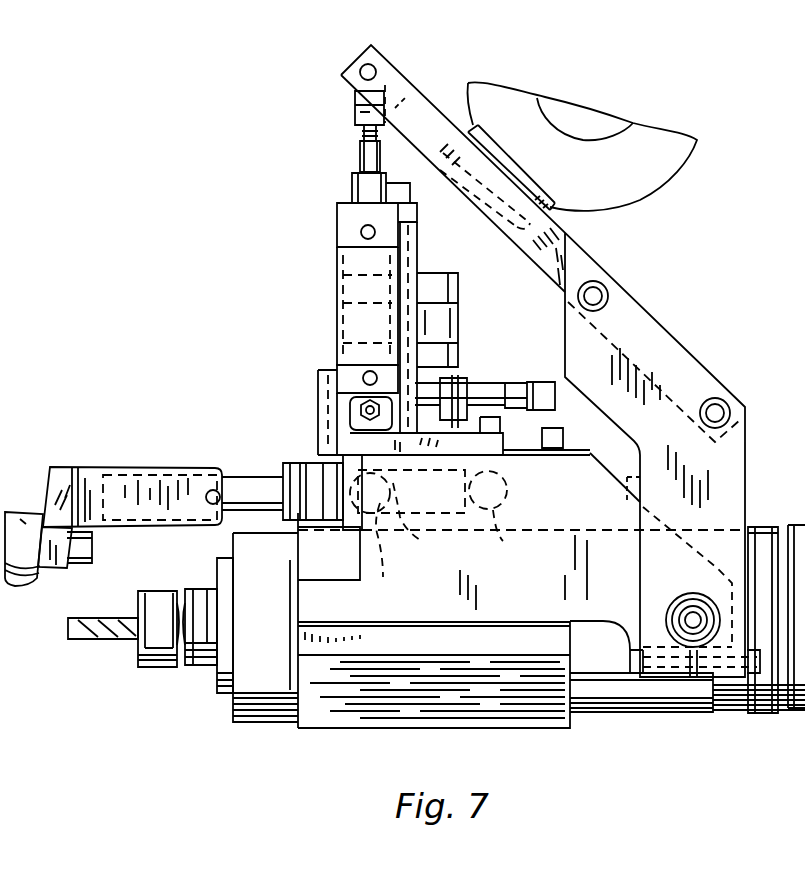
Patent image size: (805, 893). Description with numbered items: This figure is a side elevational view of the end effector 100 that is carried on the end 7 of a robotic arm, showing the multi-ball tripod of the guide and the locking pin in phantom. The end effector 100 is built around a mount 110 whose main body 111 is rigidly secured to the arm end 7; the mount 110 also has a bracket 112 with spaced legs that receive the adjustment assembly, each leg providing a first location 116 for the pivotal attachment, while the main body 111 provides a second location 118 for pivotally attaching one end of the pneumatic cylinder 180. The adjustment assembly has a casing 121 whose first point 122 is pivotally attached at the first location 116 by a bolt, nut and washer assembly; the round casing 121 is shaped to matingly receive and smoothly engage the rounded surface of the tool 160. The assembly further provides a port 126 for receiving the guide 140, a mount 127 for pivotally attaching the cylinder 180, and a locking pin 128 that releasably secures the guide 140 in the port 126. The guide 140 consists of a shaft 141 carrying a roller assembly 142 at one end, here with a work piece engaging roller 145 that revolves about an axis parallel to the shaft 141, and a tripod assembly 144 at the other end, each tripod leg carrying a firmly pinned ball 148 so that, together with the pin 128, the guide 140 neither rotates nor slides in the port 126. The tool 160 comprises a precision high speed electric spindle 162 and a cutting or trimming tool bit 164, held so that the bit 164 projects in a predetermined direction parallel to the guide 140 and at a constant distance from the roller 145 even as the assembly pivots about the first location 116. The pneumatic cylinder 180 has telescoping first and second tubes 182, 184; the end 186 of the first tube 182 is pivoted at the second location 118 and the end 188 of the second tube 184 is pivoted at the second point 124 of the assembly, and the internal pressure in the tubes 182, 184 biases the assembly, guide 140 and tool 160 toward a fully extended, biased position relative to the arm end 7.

The end of the robotic arm 7 is at (652, 166).
The end effector 100 is at (763, 431).
The mount 110 is at (690, 356).
The main body 111 is at (545, 233).
The bracket 112 is at (612, 352).
The first location 116 is at (696, 614).
The second location 118 is at (360, 70).
The casing 121 is at (352, 690).
The first point 122 is at (683, 618).
The second point 124 is at (352, 402).
The port 126 is at (590, 492).
The mount 127 is at (350, 437).
The locking pin 128 is at (430, 554).
The guide 140 is at (173, 452).
The shaft 141 is at (227, 480).
The roller assembly 142 is at (67, 475).
The tripod assembly 144 is at (300, 458).
The roller 145 is at (22, 507).
The ball 148 is at (505, 542).
The tool 160 is at (260, 718).
The spindle 162 is at (618, 672).
The tool bit 164 is at (120, 632).
The pneumatic cylinder 180 is at (350, 214).
The first tube 182 is at (360, 156).
The second tube 184 is at (350, 240).
The end 186 is at (355, 113).
The end 188 is at (320, 386).